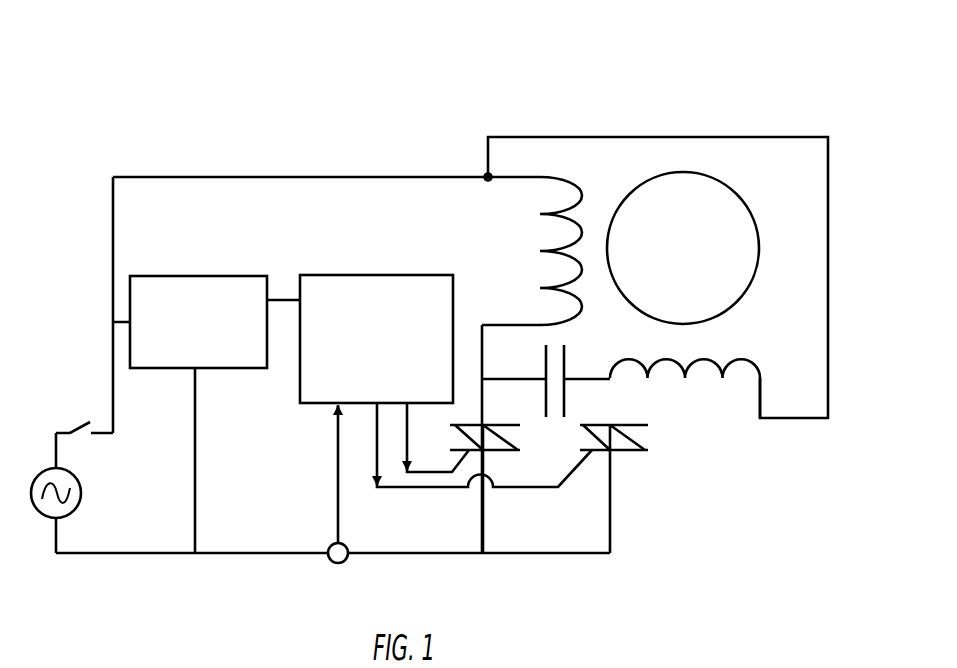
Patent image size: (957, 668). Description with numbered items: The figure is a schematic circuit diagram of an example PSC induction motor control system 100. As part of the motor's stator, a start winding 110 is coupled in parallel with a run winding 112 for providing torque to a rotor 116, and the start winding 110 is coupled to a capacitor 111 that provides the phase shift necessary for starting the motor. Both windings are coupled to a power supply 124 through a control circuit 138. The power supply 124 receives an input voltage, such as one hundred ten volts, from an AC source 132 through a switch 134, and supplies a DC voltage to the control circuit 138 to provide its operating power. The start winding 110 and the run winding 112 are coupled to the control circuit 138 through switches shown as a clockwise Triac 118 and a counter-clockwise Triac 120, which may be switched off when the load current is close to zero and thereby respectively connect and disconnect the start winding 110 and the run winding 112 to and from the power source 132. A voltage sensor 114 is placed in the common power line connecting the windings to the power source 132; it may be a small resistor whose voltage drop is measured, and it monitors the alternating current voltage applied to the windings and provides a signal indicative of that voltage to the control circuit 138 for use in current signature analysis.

The induction motor control system 100 is at (638, 105).
The start winding 110 is at (767, 418).
The capacitor 111 is at (565, 354).
The run winding 112 is at (549, 251).
The voltage sensor 114 is at (338, 563).
The rotor 116 is at (745, 290).
The clockwise Triac 118 is at (630, 452).
The counter-clockwise Triac 120 is at (490, 423).
The power supply 124 is at (233, 276).
The AC source 132 is at (48, 519).
The switch 134 is at (80, 423).
The control circuit 138 is at (388, 275).